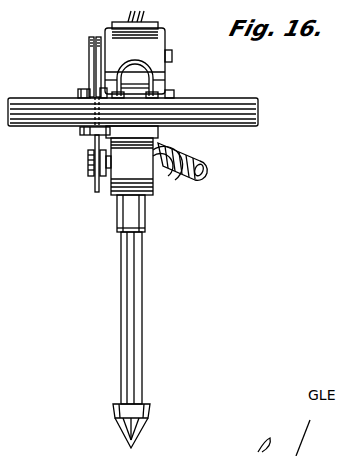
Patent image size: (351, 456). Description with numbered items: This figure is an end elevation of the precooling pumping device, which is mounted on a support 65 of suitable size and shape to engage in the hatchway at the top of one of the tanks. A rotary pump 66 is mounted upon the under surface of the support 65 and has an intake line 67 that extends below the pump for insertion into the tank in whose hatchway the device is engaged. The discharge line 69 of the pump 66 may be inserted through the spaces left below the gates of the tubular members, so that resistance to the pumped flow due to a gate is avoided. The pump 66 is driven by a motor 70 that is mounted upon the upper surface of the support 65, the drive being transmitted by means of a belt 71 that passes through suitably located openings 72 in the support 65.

The beam 65 is at (230, 104).
The body 66 is at (157, 182).
The shaft 67 is at (128, 272).
The handle 69 is at (208, 172).
The housing 70 is at (142, 40).
The clamp bolt 71 is at (94, 150).
The clamp bars 72 is at (95, 114).